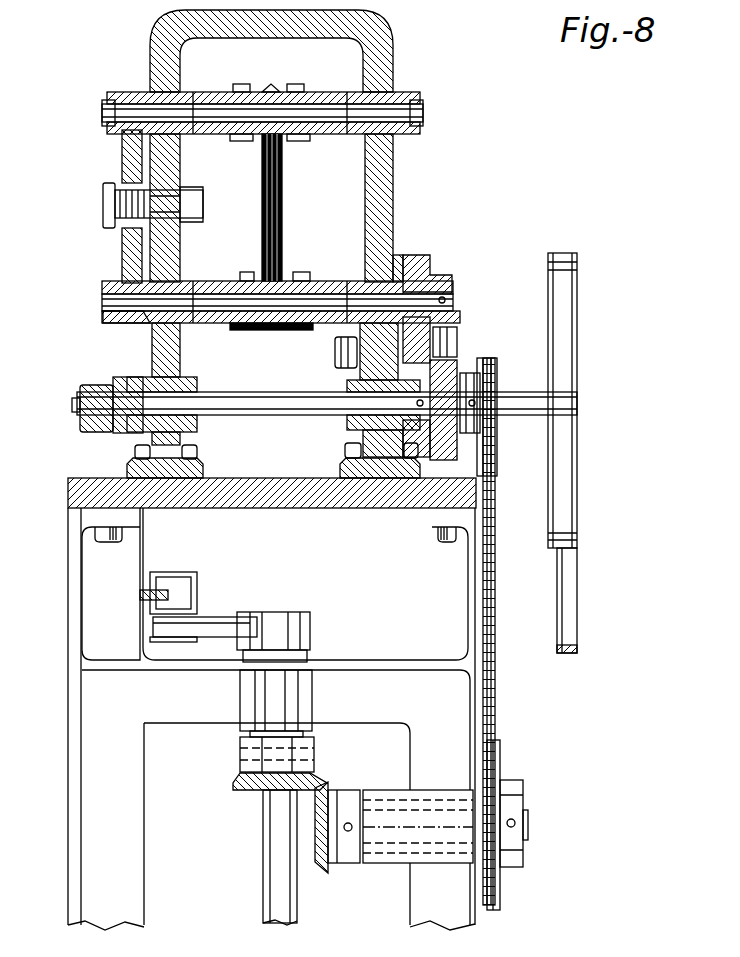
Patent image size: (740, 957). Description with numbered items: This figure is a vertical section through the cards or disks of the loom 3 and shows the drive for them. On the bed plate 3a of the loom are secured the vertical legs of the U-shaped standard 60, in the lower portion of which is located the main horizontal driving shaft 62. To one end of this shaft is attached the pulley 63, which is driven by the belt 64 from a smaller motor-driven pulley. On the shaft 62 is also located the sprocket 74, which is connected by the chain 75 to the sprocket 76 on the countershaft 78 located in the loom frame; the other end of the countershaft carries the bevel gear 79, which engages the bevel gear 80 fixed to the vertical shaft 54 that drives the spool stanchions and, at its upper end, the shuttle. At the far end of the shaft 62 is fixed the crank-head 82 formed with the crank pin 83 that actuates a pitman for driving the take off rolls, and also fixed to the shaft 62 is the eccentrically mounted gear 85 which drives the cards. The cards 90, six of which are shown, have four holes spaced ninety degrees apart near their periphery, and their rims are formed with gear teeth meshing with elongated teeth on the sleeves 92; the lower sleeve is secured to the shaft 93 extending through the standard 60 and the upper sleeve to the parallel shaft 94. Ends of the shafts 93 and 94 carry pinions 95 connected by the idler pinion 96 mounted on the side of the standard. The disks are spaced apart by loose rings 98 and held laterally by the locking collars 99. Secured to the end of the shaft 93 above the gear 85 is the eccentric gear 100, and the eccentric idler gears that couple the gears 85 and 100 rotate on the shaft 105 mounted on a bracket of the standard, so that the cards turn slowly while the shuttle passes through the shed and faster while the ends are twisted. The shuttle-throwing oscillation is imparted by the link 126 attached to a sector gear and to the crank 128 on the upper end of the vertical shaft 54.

The loom 3 is at (95, 562).
The bed plate 3a is at (68, 492).
The vertical shaft 54 is at (297, 912).
The U-shaped standard 60 is at (393, 190).
The main horizontal driving shaft 62 is at (308, 395).
The pulley 63 is at (578, 545).
The belt 64 is at (577, 600).
The sprocket 74 is at (497, 445).
The chain 75 is at (497, 708).
The sprocket 76 is at (503, 768).
The countershaft 78 is at (528, 823).
The bevel gear 79 is at (330, 790).
The bevel gear 80 is at (248, 792).
The crank-head 82 is at (125, 380).
The crank pin 83 is at (98, 433).
The eccentrically mounted gear 85 is at (458, 446).
The cards 90 is at (262, 258).
The sleeves 92 is at (350, 135).
The shaft 93 is at (398, 290).
The parallel shaft 94 is at (328, 110).
The pinions 95 is at (135, 92).
The idler pinion 96 is at (122, 154).
The loose rings 98 is at (278, 88).
The locking collars 99 is at (241, 141).
The eccentric gear 100 is at (435, 270).
The shaft 105 is at (335, 348).
The link 126 is at (140, 597).
The crank 128 is at (216, 622).